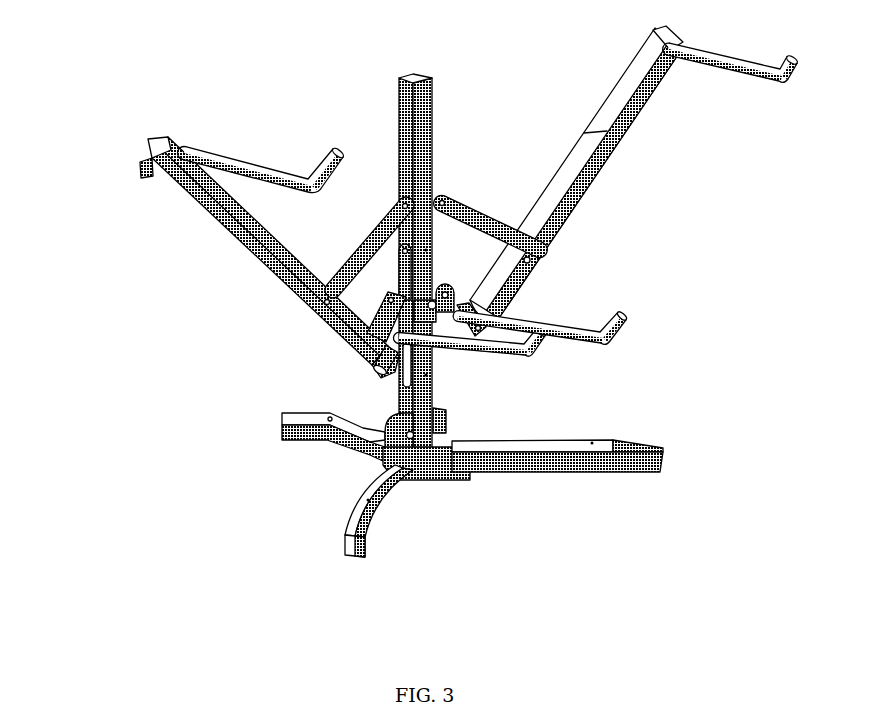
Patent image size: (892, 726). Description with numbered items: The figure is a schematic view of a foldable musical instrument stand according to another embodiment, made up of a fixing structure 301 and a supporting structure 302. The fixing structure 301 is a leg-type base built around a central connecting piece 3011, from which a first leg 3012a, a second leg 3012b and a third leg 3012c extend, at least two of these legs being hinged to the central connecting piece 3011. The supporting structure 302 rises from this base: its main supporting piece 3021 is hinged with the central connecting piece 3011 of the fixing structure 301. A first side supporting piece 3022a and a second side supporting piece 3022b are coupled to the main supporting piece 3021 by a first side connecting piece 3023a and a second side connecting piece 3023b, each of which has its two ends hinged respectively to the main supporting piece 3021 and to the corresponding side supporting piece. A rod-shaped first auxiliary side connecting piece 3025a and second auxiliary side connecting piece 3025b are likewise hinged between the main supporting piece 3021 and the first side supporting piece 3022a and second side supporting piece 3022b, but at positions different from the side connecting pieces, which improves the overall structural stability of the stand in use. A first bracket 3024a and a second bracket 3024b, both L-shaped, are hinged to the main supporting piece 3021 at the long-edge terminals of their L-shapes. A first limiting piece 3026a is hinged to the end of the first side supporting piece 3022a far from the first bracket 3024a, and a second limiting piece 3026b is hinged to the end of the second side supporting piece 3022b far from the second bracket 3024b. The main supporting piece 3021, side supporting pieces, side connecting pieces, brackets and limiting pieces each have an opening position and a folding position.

The fixing structure 301 is at (423, 535).
The central connecting piece 3011 is at (468, 479).
The first leg 3012a is at (327, 438).
The second leg 3012b is at (360, 518).
The third leg 3012c is at (583, 455).
The supporting structure 302 is at (72, 408).
The main supporting piece 3021 is at (417, 108).
The first side supporting piece 3022a is at (625, 118).
The second side supporting piece 3022b is at (233, 225).
The first side connecting piece 3023a is at (473, 222).
The second side connecting piece 3023b is at (363, 257).
The first bracket 3024a is at (617, 332).
The second bracket 3024b is at (373, 353).
The first auxiliary side connecting piece 3025a is at (475, 308).
The second auxiliary side connecting piece 3025b is at (388, 320).
The first limiting piece 3026a is at (738, 70).
The second limiting piece 3026b is at (230, 162).